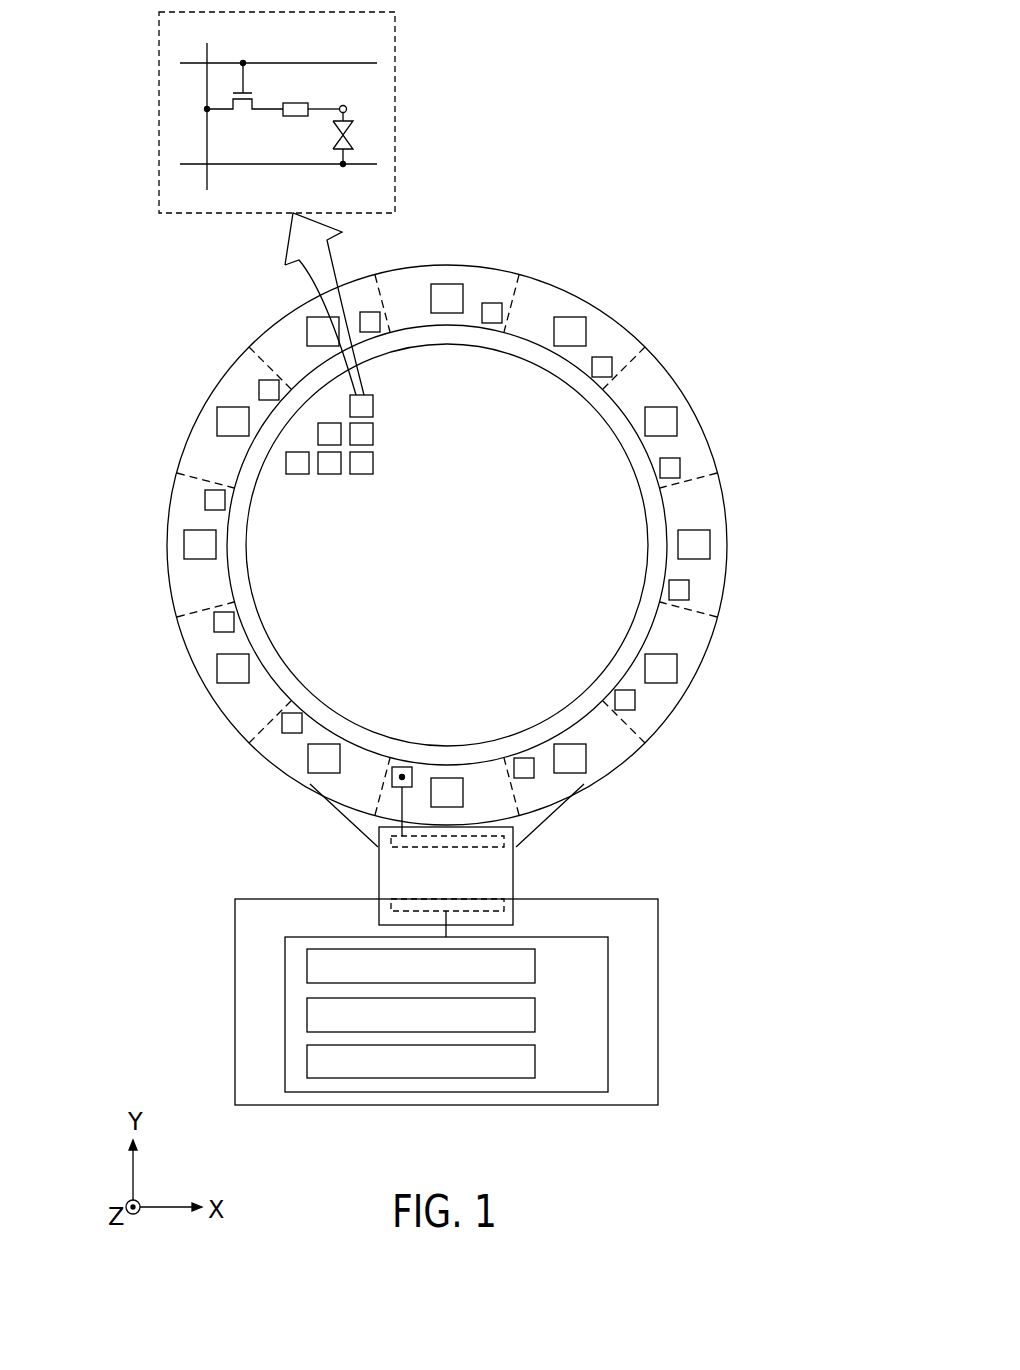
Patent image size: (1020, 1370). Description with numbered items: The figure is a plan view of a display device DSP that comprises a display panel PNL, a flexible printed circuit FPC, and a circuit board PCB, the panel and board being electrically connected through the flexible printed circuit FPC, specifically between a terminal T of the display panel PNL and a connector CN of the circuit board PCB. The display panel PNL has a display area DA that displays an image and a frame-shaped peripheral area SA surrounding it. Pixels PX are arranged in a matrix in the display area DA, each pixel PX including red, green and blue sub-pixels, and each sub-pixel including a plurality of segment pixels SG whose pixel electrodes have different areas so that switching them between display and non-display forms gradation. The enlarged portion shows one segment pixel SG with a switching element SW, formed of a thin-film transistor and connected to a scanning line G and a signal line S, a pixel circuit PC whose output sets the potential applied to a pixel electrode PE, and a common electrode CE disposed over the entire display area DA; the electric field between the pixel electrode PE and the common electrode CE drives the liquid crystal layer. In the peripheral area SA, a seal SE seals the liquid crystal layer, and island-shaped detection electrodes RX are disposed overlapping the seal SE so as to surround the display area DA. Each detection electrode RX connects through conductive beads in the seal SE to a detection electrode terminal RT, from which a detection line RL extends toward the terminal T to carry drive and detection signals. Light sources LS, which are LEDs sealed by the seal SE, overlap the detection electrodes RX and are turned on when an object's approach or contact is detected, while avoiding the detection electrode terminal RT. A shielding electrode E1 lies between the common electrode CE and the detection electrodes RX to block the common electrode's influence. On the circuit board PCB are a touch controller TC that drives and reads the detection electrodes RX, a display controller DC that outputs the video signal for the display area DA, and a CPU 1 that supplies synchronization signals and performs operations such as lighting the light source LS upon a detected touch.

The segment pixel SG is at (396, 48).
The scanning line G is at (194, 62).
The signal line S is at (205, 129).
The switching element SW is at (265, 96).
The pixel circuit PC is at (296, 117).
The pixel electrode PE is at (346, 105).
The common electrode CE is at (345, 167).
The display panel PNL is at (618, 310).
The peripheral area SA is at (724, 580).
The display area DA is at (460, 577).
The shielding electrode E1 is at (582, 702).
The seal SE is at (170, 597).
The light source LS is at (665, 672).
The detection electrode RX is at (243, 712).
The detection electrode terminal RT is at (402, 765).
The detection line RL is at (399, 810).
The pixel PX is at (375, 462).
The display device DSP is at (577, 159).
The flexible printed circuit FPC is at (514, 868).
The terminal T is at (516, 836).
The connector CN is at (515, 905).
The circuit board PCB is at (660, 1008).
The touch controller TC is at (537, 966).
The display controller DC is at (537, 1015).
The CPU 1 is at (537, 1061).